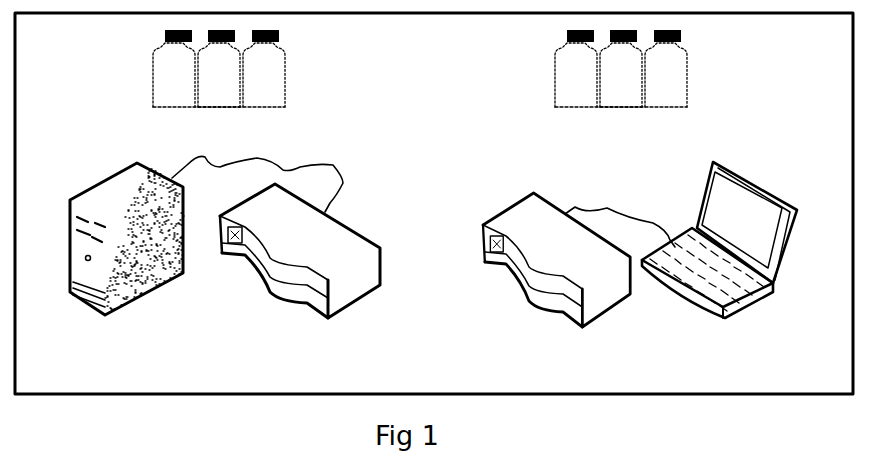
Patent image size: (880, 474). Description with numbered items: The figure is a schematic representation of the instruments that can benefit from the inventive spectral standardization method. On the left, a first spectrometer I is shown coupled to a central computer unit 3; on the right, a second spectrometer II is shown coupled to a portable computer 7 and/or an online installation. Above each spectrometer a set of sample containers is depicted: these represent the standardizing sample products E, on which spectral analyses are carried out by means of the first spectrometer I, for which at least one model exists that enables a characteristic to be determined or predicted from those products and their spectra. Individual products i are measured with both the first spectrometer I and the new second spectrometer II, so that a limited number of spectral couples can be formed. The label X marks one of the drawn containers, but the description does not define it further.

The central computer unit 3 is at (102, 177).
The standardizing sample products E is at (535, 69).
The containers X is at (727, 60).
The products i is at (640, 127).
The first spectrometer I is at (343, 218).
The second spectrometer II is at (538, 193).
The portable computer 7 is at (768, 170).